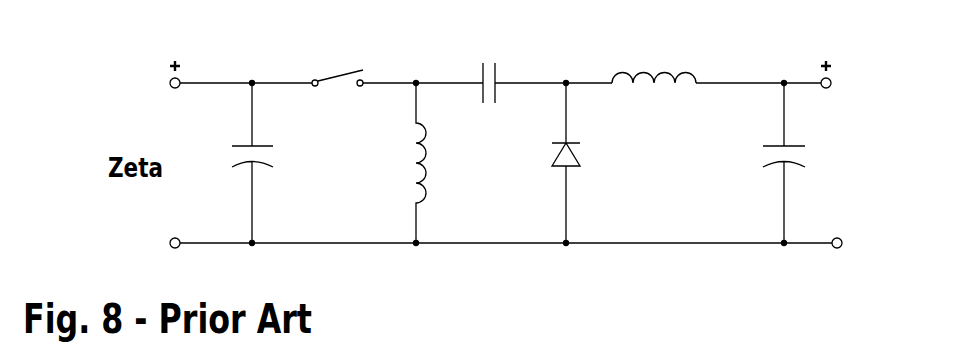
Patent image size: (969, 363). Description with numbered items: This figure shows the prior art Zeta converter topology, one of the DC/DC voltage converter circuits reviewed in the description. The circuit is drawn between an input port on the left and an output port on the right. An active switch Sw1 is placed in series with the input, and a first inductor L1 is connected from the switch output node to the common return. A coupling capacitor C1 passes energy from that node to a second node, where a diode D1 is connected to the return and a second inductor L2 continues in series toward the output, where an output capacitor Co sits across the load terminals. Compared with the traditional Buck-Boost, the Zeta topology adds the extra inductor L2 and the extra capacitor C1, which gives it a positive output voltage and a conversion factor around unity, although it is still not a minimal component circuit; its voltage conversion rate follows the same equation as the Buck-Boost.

The switch Sw1 is at (335, 59).
The coupling capacitor C1 is at (485, 62).
The first inductor L1 is at (401, 163).
The diode D1 is at (542, 163).
The second inductor L2 is at (654, 58).
The output capacitor Co is at (761, 163).